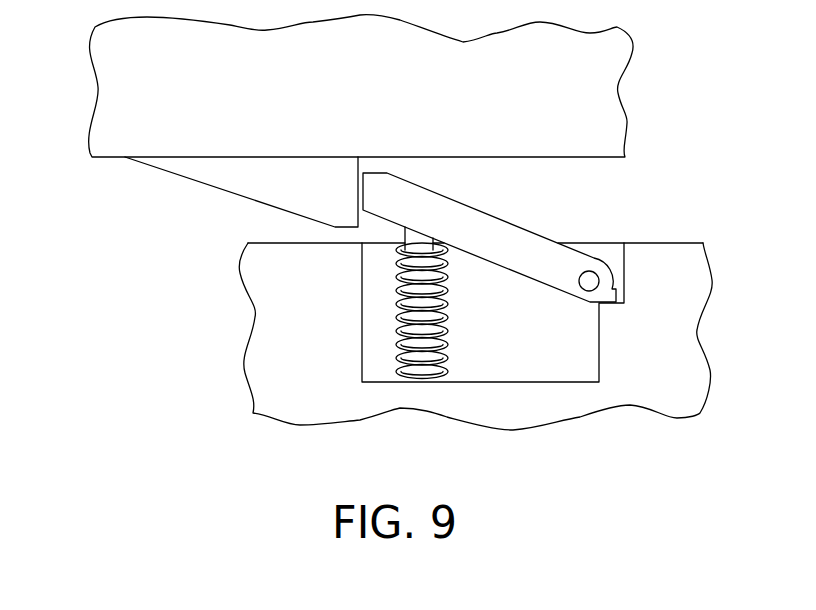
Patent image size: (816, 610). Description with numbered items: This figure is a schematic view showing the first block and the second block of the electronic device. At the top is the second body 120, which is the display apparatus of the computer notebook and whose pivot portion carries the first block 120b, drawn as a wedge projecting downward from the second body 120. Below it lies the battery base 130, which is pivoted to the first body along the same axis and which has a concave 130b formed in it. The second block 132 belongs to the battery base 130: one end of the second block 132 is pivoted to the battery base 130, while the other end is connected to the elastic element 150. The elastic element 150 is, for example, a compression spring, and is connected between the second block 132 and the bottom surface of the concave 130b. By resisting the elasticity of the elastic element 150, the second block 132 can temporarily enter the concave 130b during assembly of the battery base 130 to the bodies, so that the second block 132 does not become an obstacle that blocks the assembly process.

The second body 120 is at (552, 73).
The first block 120b is at (242, 179).
The battery base 130 is at (288, 318).
The concave 130b is at (533, 382).
The second block 132 is at (503, 243).
The elastic element 150 is at (395, 347).